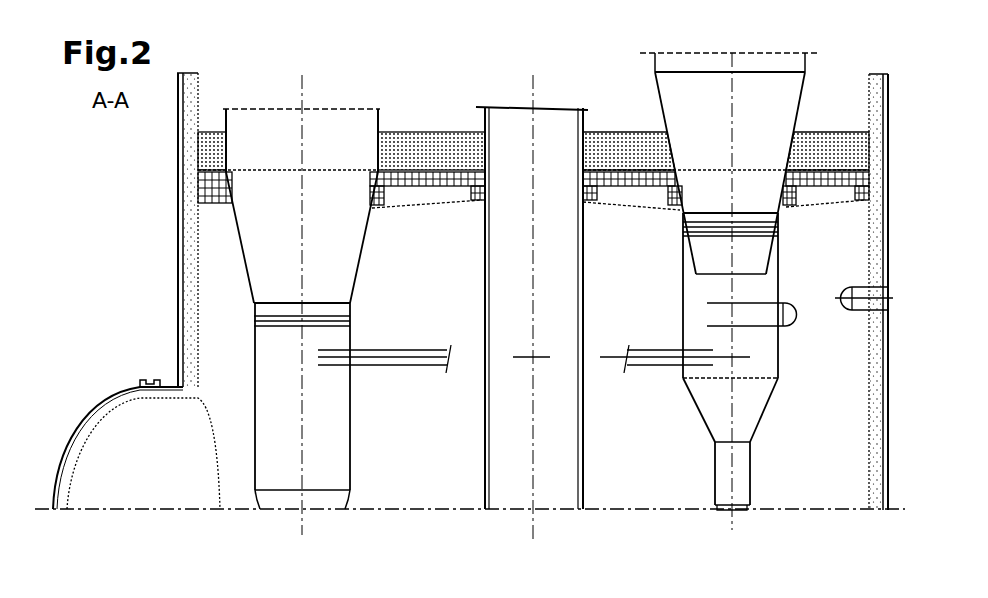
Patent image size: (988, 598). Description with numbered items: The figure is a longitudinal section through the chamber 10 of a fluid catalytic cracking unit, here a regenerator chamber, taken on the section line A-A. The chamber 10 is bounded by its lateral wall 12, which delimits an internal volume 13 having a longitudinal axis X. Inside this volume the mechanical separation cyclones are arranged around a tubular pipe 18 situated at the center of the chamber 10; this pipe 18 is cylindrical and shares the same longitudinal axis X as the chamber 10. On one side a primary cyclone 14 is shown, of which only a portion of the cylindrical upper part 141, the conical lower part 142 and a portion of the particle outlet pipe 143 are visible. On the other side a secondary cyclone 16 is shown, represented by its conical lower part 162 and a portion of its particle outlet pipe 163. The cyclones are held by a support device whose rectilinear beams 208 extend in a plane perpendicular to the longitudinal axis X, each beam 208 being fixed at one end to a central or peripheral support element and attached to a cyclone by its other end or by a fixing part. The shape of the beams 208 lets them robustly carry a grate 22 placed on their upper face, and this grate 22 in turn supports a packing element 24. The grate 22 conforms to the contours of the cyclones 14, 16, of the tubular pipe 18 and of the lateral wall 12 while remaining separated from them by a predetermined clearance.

The chamber 10 is at (900, 90).
The lateral wall 12 is at (890, 112).
The internal volume 13 is at (858, 228).
The primary cyclone 14 is at (301, 292).
The cylindrical upper part 141 is at (380, 118).
The conical lower part 142 is at (362, 272).
The particle outlet pipe 143 is at (255, 427).
The secondary cyclone 16 is at (722, 287).
The conical lower part 162 is at (805, 80).
The particle outlet pipe 163 is at (778, 352).
The tubular pipe 18 is at (485, 490).
The grate 22 is at (846, 208).
The packing element 24 is at (413, 130).
The beam 208 is at (218, 202).
The longitudinal axis X is at (533, 523).